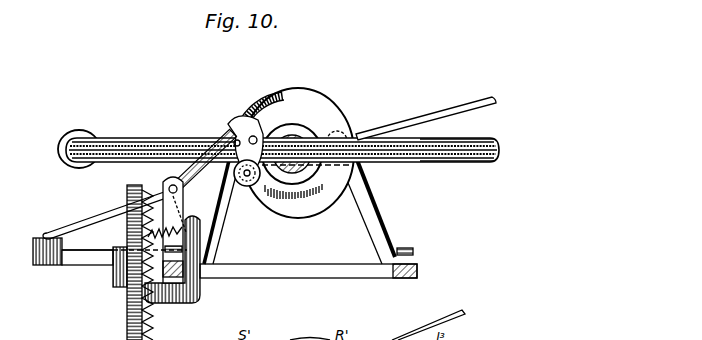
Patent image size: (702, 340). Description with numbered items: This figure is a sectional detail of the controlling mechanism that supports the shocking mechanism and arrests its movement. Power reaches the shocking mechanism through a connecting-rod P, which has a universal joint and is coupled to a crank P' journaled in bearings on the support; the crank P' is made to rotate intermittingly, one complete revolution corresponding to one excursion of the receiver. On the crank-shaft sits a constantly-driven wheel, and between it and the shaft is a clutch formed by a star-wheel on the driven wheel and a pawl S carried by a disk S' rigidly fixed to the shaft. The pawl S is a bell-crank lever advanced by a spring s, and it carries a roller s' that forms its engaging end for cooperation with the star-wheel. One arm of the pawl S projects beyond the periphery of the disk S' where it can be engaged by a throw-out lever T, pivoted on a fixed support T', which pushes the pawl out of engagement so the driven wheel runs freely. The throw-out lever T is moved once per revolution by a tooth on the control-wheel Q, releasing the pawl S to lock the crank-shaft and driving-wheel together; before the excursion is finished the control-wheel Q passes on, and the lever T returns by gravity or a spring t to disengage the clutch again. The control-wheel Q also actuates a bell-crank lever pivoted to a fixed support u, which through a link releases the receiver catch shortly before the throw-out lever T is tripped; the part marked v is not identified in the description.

The crank P' is at (278, 134).
The connecting-rod P is at (457, 164).
The pawl S is at (236, 136).
The spring s is at (262, 106).
The disk S' is at (308, 181).
The roller s' is at (243, 187).
The throw-out lever T is at (188, 240).
The fixed support T' is at (188, 161).
The spring t is at (167, 217).
The fixed support u is at (80, 260).
The bar arm v is at (97, 246).
The control-wheel Q is at (127, 303).